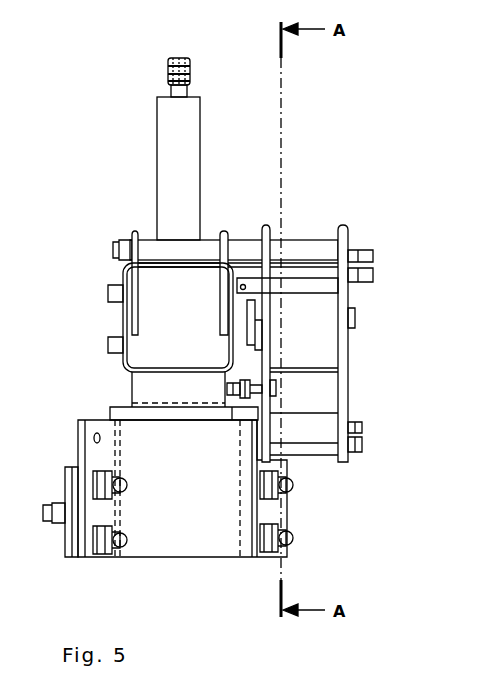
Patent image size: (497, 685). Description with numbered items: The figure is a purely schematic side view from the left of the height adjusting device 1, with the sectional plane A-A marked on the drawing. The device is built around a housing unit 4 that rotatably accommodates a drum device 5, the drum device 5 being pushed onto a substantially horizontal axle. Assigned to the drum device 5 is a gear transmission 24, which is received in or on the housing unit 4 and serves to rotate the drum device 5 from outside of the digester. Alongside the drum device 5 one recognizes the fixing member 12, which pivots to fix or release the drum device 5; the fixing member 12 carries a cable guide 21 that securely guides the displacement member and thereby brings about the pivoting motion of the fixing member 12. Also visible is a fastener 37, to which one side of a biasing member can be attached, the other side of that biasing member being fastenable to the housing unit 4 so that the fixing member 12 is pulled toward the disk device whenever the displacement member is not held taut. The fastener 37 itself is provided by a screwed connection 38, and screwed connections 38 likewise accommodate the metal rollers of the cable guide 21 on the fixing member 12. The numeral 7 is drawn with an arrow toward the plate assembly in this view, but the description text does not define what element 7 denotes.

The height adjusting device 1 is at (90, 80).
The gear transmission 24 is at (170, 158).
The holder plate 7 is at (306, 218).
The fixing member 12 is at (342, 300).
The drum device 5 is at (325, 338).
The cable guide 21 is at (322, 428).
The housing unit 4 is at (185, 347).
The screwed connection 38 is at (226, 385).
The fastener 37 is at (248, 383).